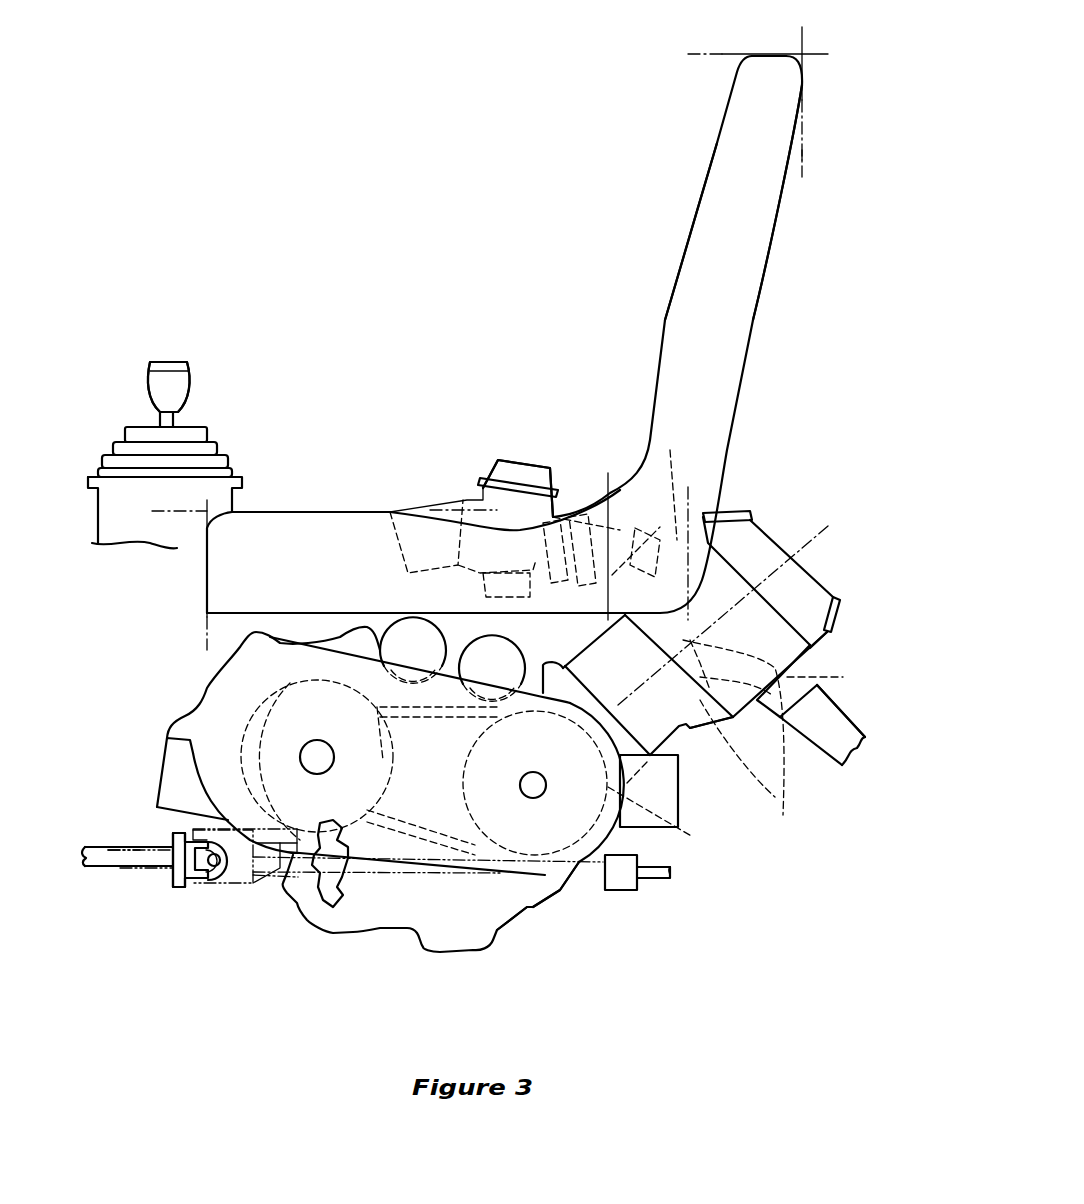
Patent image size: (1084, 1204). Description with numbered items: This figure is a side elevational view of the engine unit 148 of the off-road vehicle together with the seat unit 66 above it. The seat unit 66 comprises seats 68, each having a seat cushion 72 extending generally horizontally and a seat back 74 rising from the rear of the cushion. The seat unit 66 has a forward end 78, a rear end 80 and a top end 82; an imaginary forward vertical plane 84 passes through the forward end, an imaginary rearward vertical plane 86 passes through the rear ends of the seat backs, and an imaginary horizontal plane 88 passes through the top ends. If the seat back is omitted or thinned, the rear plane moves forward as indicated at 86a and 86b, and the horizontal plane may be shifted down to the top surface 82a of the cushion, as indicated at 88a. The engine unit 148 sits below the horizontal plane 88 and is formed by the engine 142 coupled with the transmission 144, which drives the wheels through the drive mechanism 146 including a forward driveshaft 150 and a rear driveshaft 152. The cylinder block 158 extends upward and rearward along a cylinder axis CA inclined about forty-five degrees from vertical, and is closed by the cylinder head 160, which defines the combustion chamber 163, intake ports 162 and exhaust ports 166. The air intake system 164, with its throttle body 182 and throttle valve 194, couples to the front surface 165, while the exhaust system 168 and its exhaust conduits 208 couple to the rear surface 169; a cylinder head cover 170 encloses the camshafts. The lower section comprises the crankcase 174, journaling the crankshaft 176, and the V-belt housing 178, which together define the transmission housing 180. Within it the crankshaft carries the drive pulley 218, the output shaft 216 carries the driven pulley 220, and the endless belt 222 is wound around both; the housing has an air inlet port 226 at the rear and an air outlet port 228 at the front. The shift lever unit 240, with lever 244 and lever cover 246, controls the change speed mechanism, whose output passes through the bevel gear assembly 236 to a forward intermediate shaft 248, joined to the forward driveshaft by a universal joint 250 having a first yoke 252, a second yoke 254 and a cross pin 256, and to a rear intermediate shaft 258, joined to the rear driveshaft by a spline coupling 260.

The seat unit 66 is at (683, 100).
The seat 68 is at (682, 240).
The seat cushion 72 is at (330, 510).
The seat back 74 is at (770, 258).
The forward end 78 is at (206, 575).
The rear end 80 is at (802, 80).
The top end 82 is at (772, 55).
The top surface 82a is at (300, 510).
The forward vertical plane 84 is at (206, 640).
The rearward vertical plane 86 is at (802, 157).
The rear vertical plane (seat back omitted) 86a is at (688, 487).
The rear vertical plane (reduced thickness) 86b is at (608, 473).
The horizontal plane 88 is at (708, 54).
The shifted horizontal plane 88a is at (180, 510).
The engine 142 is at (676, 734).
The transmission 144 is at (625, 818).
The drive mechanism 146 is at (142, 835).
The engine unit 148 is at (845, 612).
The forward driveshaft 150 is at (108, 848).
The rear driveshaft 152 is at (650, 884).
The cylinder block 158 is at (698, 722).
The cylinder head 160 is at (810, 660).
The intake port 162 is at (700, 522).
The combustion chamber 163 is at (741, 732).
The air intake system 164 is at (513, 440).
The front surface 165 is at (672, 482).
The exhaust port 166 is at (834, 677).
The exhaust system 168 is at (848, 725).
The rear surface 169 is at (752, 702).
The cylinder head cover 170 is at (812, 585).
The crankcase 174 is at (570, 887).
The crankshaft 176 is at (546, 782).
The V-belt housing 178 is at (525, 872).
The transmission housing 180 is at (636, 958).
The throttle body 182 is at (490, 468).
The throttle valve 194 is at (548, 470).
The exhaust conduit 208 is at (855, 728).
The output shaft 216 is at (331, 748).
The drive pulley 218 is at (672, 822).
The driven pulley 220 is at (240, 757).
The endless belt 222 is at (413, 717).
The air inlet port 226 is at (678, 800).
The air outlet port 228 is at (170, 738).
The bevel gear assembly 236 is at (346, 910).
The shift lever unit 240 is at (192, 360).
The lever 244 is at (190, 382).
The lever cover 246 is at (222, 462).
The forward intermediate shaft 248 is at (303, 880).
The universal joint 250 is at (170, 877).
The first yoke 252 is at (237, 890).
The second yoke 254 is at (178, 890).
The cross pin 256 is at (207, 880).
The rear intermediate shaft 258 is at (462, 870).
The spline coupling 260 is at (624, 896).
The cylinder axis CA is at (805, 547).